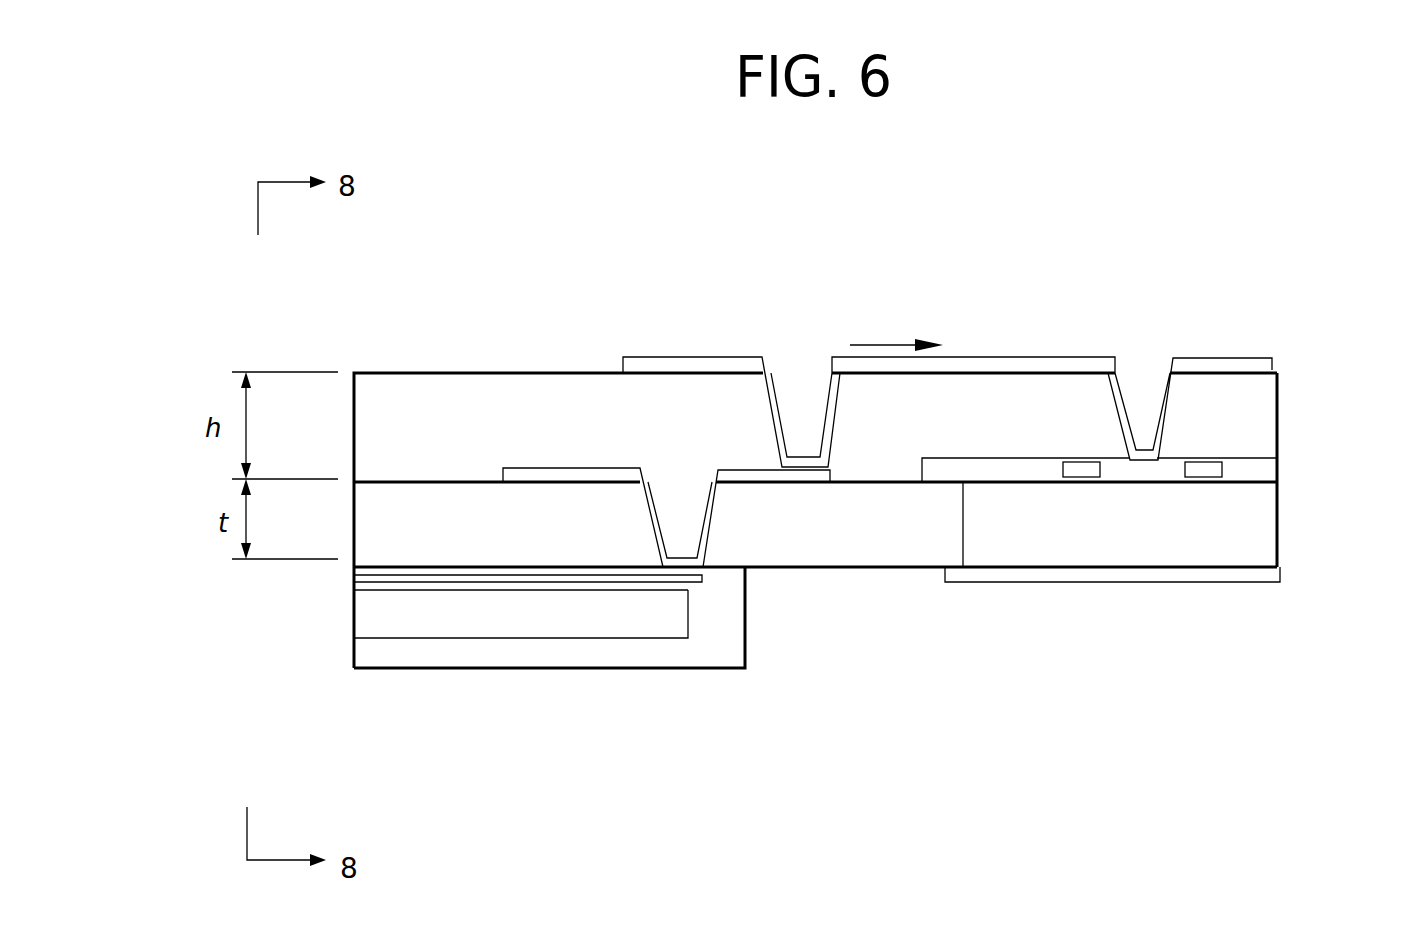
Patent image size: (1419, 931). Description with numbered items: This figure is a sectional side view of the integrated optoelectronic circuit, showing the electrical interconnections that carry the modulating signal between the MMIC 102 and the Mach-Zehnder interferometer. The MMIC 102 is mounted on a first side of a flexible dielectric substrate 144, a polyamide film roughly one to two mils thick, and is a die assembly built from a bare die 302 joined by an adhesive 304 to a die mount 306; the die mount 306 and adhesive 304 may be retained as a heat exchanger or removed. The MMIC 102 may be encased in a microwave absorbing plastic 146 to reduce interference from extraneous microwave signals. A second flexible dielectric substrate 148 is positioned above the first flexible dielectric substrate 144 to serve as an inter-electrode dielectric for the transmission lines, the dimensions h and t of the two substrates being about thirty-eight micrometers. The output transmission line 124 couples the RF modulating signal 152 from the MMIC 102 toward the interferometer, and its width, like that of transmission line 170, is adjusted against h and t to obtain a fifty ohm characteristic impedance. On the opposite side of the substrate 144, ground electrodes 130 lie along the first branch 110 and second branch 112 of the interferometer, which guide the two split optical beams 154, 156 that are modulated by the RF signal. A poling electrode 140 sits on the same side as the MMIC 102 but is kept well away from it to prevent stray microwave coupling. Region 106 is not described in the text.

The monolithic microwave integrated circuit 102 is at (662, 758).
The substrate region 106 is at (1260, 465).
The first branch 110 is at (1083, 472).
The second branch 112 is at (1208, 465).
The output transmission line 124 is at (957, 357).
The ground electrode 130 is at (1158, 447).
The poling electrode 140 is at (1168, 583).
The flexible dielectric substrate 144 is at (490, 518).
The microwave absorbing plastic 146 is at (725, 637).
The second flexible dielectric substrate 148 is at (578, 373).
The RF modulating signal 152 is at (888, 343).
The optical beam 154 is at (795, 423).
The optical beam 156 is at (1146, 398).
The transmission line 170 is at (675, 542).
The bare die 302 is at (355, 578).
The adhesive 304 is at (355, 589).
The die mount 306 is at (378, 618).